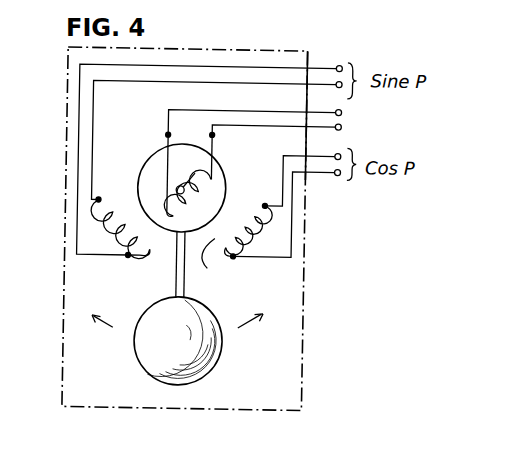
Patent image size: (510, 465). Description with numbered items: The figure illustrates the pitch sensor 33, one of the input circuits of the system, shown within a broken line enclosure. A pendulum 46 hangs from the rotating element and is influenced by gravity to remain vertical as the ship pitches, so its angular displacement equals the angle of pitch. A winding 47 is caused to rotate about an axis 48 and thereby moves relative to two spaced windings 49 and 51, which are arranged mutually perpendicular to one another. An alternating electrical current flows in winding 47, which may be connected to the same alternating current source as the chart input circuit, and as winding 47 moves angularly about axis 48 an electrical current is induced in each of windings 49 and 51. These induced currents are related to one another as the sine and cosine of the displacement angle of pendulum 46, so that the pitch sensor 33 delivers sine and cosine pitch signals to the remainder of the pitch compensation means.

The pitch sensor 33 is at (304, 49).
The pendulum 46 is at (222, 350).
The winding 47 is at (204, 182).
The axis 48 is at (186, 176).
The winding 49 is at (120, 243).
The winding 51 is at (236, 245).